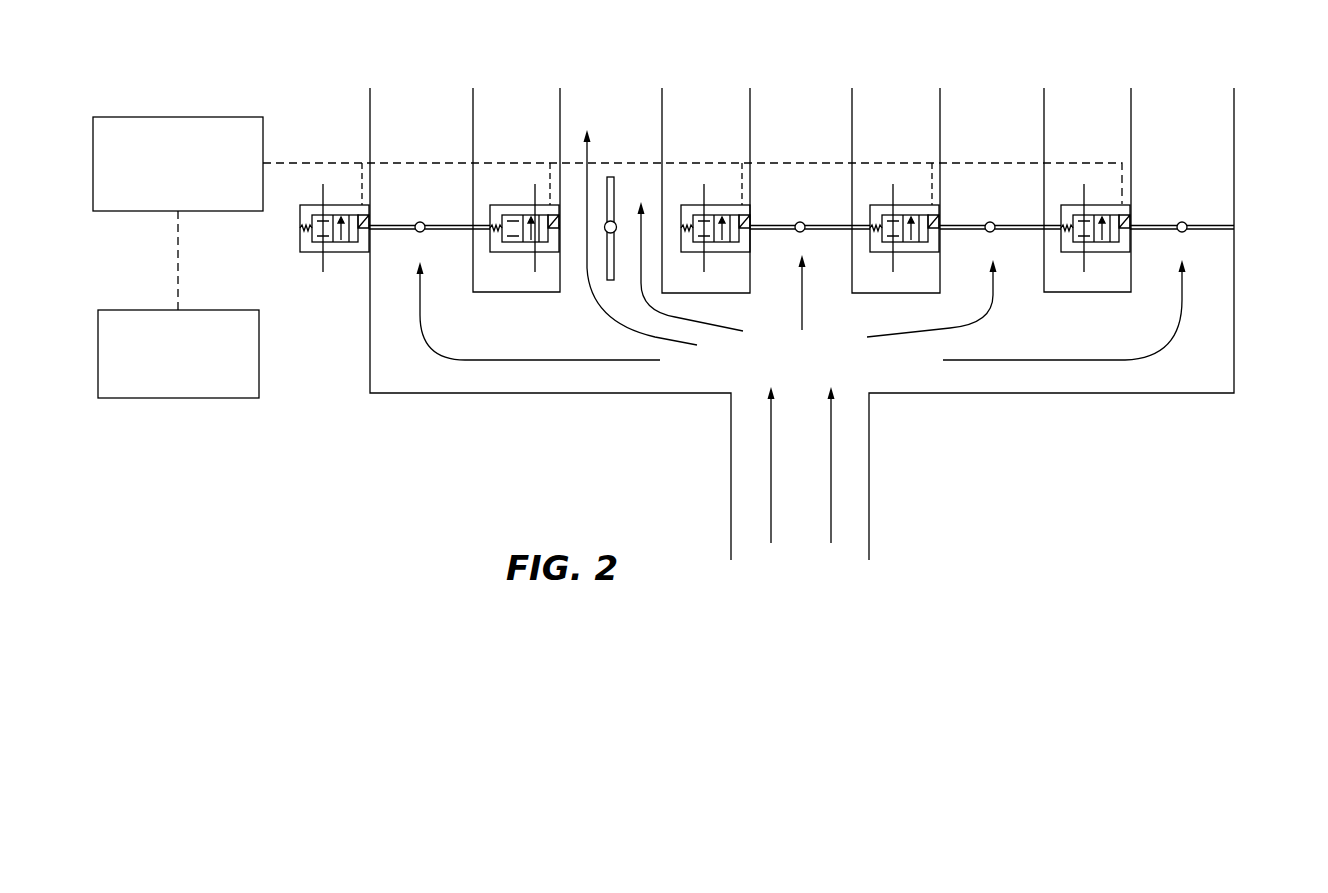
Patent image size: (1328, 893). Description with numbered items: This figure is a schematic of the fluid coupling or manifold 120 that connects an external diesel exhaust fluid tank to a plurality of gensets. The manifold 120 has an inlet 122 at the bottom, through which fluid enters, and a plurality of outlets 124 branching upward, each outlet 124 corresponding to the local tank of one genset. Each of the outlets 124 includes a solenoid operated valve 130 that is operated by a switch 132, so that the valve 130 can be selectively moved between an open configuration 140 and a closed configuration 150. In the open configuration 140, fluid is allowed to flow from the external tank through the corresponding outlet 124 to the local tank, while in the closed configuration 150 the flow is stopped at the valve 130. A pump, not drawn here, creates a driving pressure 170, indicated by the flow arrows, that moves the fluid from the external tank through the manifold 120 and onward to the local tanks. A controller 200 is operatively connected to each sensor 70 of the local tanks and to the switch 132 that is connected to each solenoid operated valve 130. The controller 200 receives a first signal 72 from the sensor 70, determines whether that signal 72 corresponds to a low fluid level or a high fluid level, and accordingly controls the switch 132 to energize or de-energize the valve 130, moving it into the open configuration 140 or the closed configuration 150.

The controller 200 is at (137, 117).
The sensor 70 is at (158, 399).
The first signal 72 is at (178, 263).
The manifold 120 is at (1255, 270).
The inlet 122 is at (855, 487).
The outlets 124 is at (997, 103).
The solenoid operated valve 130 is at (394, 225).
The switch 132 is at (345, 256).
The open configuration 140 is at (626, 190).
The closed configuration 150 is at (818, 197).
The driving pressure 170 is at (770, 462).